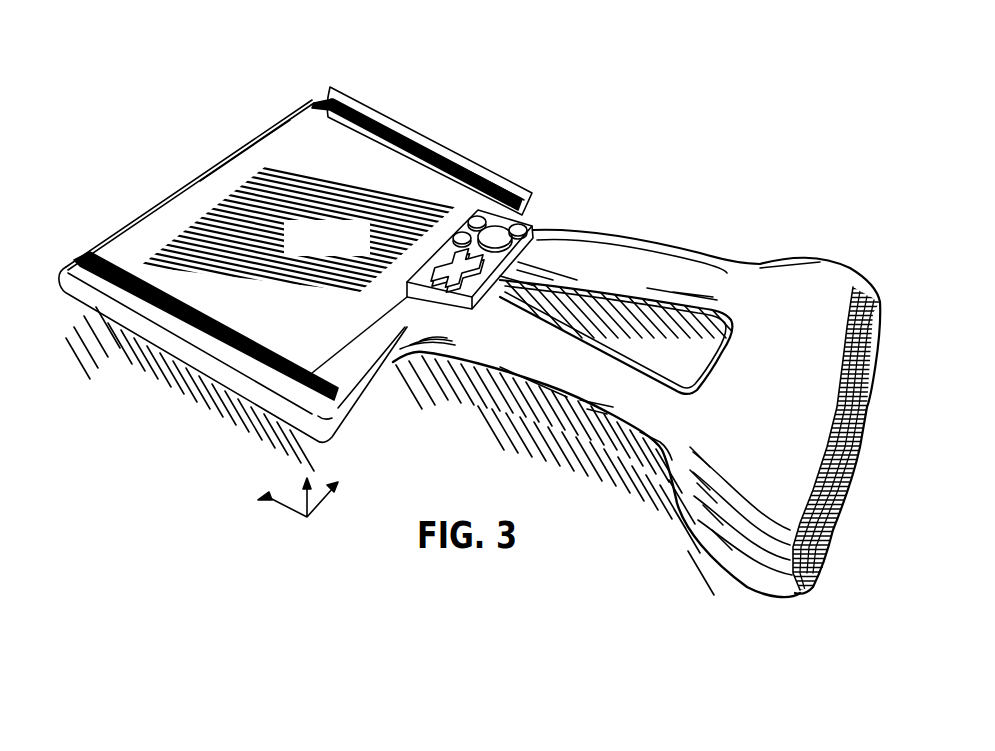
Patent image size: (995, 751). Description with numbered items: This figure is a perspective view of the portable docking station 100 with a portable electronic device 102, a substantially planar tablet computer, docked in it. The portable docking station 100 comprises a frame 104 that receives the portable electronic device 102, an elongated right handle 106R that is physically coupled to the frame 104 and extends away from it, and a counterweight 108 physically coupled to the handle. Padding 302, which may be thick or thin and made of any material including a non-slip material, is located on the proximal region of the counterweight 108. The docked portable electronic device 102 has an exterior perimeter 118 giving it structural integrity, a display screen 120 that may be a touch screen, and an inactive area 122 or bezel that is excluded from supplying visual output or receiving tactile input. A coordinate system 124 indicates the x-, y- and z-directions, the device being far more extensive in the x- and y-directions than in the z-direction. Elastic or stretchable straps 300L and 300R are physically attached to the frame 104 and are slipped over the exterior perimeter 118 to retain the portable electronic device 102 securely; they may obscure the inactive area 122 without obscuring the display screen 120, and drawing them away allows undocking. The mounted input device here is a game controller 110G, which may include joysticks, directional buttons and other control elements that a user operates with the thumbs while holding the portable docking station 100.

The portable docking station 100 is at (604, 99).
The portable electronic device 102 is at (220, 188).
The frame 104 is at (372, 108).
The right handle 106R is at (650, 253).
The counterweight 108 is at (817, 273).
The game controller 110G is at (511, 208).
The exterior perimeter 118 is at (167, 197).
The display screen 120 is at (305, 252).
The inactive area 122 is at (281, 147).
The coordinate system 124 is at (288, 548).
The left strap 300L is at (112, 260).
The right strap 300R is at (317, 103).
The padding 302 is at (827, 487).